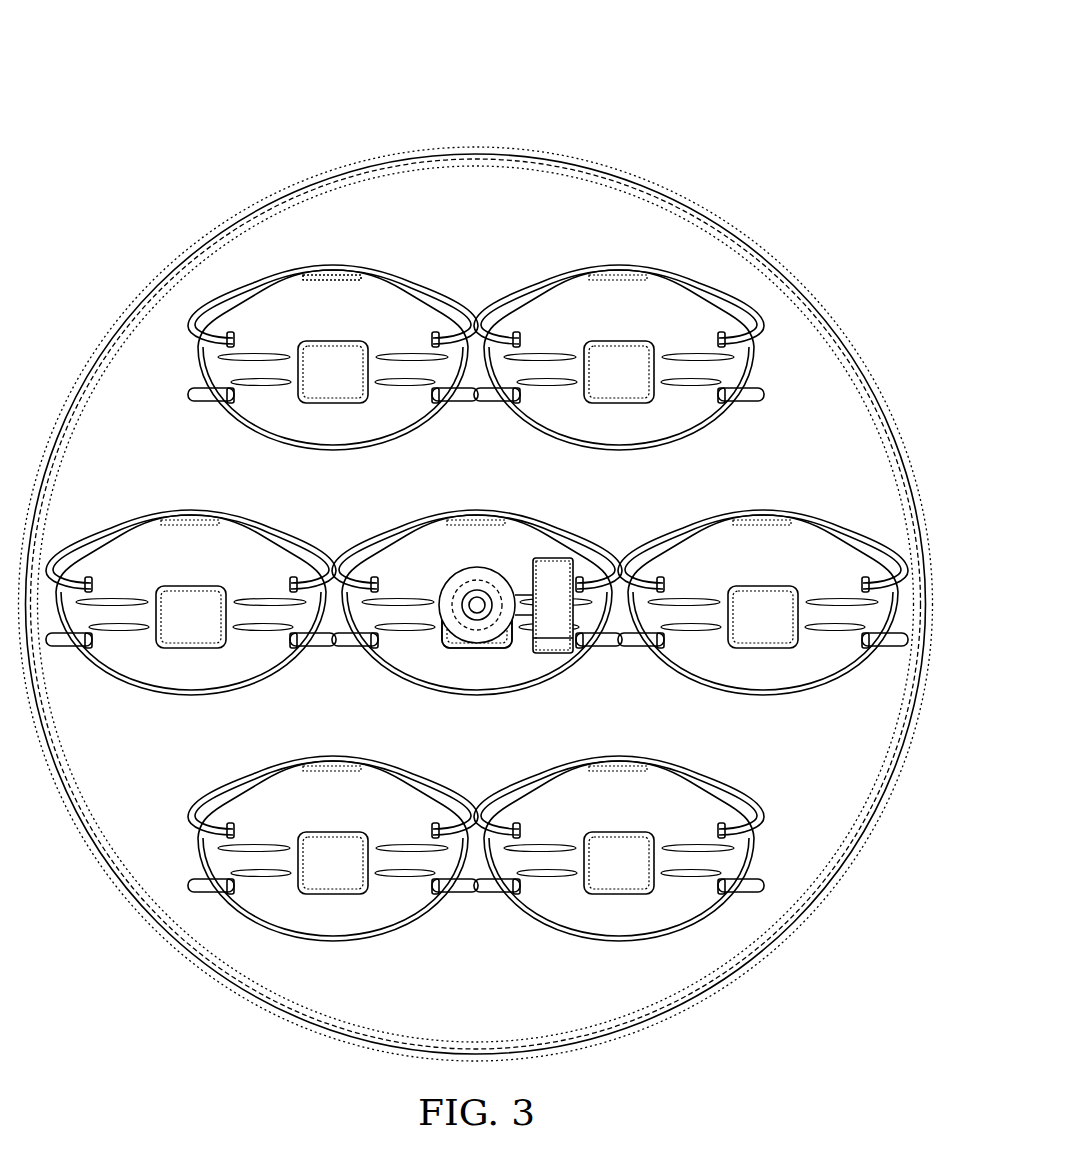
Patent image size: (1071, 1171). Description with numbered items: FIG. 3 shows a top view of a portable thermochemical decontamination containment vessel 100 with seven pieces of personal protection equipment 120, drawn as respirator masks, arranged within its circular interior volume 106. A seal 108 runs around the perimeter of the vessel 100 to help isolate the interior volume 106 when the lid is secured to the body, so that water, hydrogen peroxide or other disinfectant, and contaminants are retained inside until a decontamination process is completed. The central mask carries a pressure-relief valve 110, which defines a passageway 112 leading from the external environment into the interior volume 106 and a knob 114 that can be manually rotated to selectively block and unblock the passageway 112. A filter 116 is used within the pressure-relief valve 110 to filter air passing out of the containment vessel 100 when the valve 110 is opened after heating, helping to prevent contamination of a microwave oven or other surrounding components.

The portable thermochemical decontamination containment vessel 100 is at (476, 536).
The interior volume 106 is at (477, 581).
The seal 108 is at (697, 205).
The pressure-relief valve 110 is at (457, 565).
The passageway 112 is at (477, 598).
The knob 114 is at (550, 655).
The filter 116 is at (482, 632).
The personal protection equipment 120 is at (372, 279).